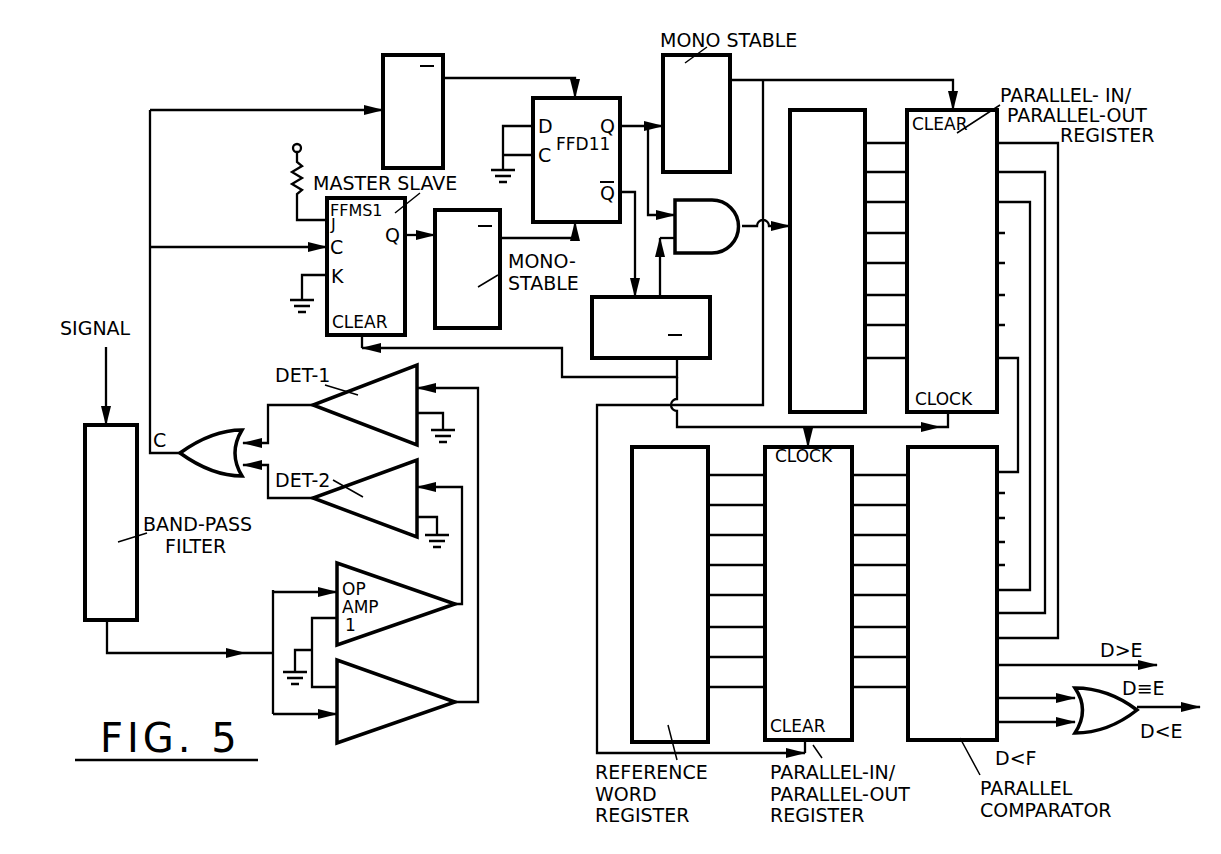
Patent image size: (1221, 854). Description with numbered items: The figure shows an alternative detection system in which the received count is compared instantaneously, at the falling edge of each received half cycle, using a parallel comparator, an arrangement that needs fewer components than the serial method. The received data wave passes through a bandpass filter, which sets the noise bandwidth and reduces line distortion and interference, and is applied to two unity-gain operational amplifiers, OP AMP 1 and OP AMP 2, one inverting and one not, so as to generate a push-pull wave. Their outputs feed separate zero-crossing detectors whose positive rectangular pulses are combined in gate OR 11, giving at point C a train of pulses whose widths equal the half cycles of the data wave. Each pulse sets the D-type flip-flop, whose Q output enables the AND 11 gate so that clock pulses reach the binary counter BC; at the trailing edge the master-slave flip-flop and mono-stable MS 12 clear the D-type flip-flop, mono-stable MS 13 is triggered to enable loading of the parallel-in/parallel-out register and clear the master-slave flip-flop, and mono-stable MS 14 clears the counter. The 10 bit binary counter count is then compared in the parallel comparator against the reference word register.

The operational amplifier OP.AMP 1 is at (413, 111).
The operational amplifier OP.AMP 2 is at (396, 701).
The 10 bit binary counter 10 is at (873, 73).
The gate OR- 11 is at (459, 338).
The mono-stable MS12 12 is at (467, 269).
The mono-stable MS13 13 is at (651, 327).
The mono-stable MS14 14 is at (696, 113).